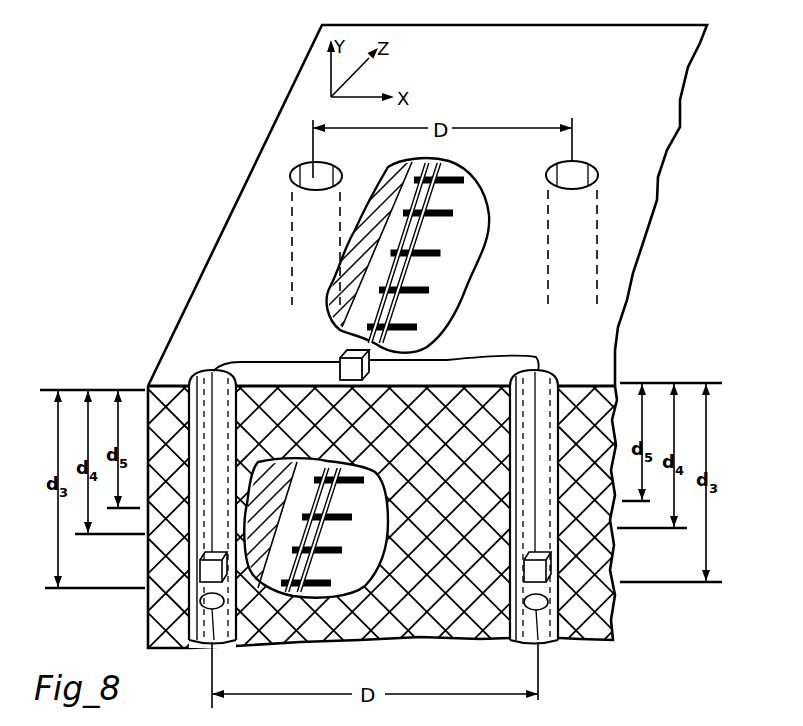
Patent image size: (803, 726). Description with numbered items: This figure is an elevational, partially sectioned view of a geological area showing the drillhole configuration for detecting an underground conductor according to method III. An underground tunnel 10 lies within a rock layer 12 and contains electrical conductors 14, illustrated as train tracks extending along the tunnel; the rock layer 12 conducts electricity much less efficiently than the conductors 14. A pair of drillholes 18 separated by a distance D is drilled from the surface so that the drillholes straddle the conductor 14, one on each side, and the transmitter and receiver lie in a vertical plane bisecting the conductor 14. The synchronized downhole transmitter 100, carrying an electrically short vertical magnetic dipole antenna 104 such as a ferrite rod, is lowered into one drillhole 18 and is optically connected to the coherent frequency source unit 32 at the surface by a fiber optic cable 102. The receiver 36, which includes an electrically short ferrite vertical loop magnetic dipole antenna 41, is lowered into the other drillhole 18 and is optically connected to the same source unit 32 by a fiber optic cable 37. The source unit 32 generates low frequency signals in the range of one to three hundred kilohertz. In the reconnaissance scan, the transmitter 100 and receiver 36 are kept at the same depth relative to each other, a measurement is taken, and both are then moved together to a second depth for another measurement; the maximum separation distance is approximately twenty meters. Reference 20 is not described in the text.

The underground tunnel 10 is at (456, 284).
The rock layer 12 is at (348, 270).
The electrical conductors 14 is at (416, 164).
The drillhole 18 is at (309, 168).
The support board 20 is at (238, 228).
The coherent frequency source unit 32 is at (340, 360).
The fiber optic cable 37 is at (457, 360).
The synchronized downhole transmitter 100 is at (205, 642).
The fiber optic cable 102 is at (263, 362).
The vertical magnetic dipole antenna 104 is at (221, 640).
The receiver 36 is at (528, 642).
The ferrite vertical loop magnetic dipole antenna 41 is at (547, 642).